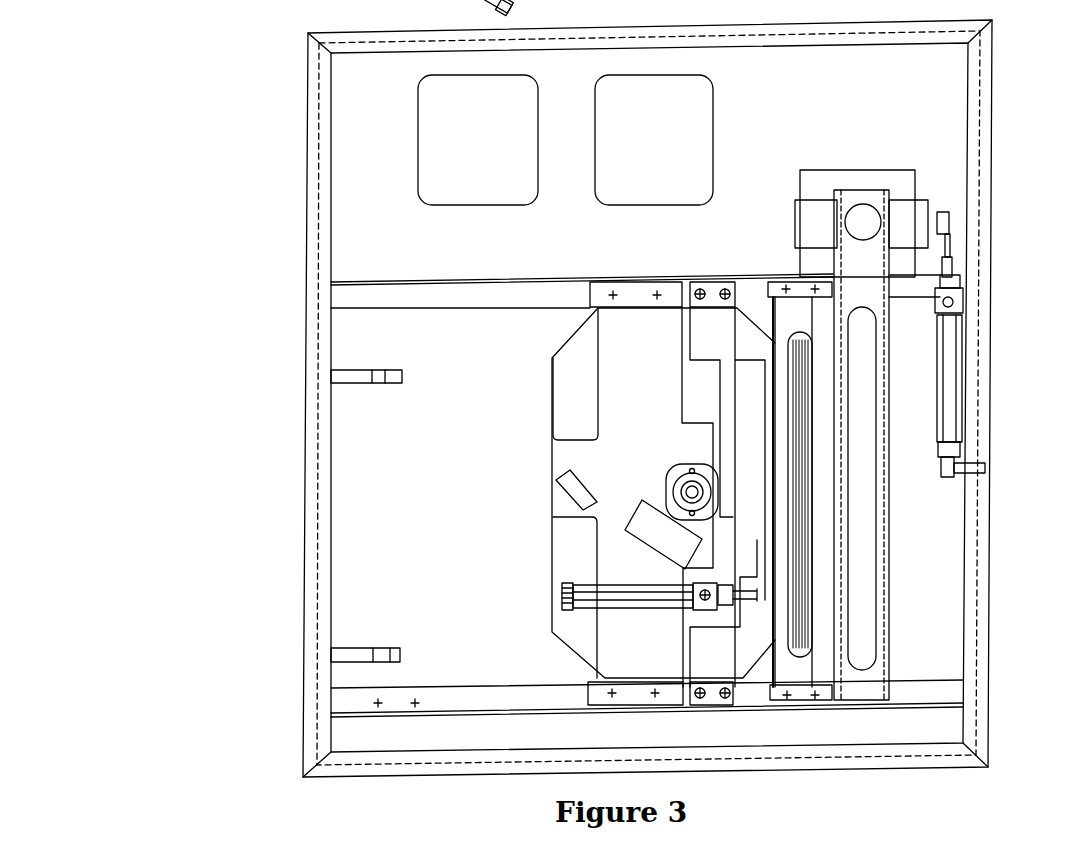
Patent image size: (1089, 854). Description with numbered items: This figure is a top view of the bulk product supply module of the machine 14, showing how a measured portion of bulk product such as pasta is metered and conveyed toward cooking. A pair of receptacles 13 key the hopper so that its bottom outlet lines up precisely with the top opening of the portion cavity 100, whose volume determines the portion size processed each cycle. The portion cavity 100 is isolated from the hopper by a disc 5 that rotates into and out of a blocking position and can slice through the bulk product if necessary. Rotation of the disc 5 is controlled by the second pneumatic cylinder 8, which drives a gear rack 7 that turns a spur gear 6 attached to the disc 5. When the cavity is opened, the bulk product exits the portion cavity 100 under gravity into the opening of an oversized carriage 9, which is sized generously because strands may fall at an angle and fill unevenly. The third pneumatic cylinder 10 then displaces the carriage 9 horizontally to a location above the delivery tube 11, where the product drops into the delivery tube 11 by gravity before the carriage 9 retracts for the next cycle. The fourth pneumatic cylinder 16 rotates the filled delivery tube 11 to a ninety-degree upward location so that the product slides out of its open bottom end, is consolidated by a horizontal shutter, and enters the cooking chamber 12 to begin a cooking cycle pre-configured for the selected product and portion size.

The disc 5 is at (570, 337).
The spur gear 6 is at (688, 460).
The gear rack 7 is at (595, 513).
The second pneumatic cylinder 8 is at (477, 421).
The carriage 9 is at (762, 302).
The third pneumatic cylinder 10 is at (572, 585).
The delivery tube 11 is at (888, 565).
The cooking chamber 12 is at (855, 168).
The receptacles 13 is at (357, 648).
The machine 14 is at (305, 695).
The fourth pneumatic cylinder 16 is at (965, 332).
The portion cavity 100 is at (800, 650).